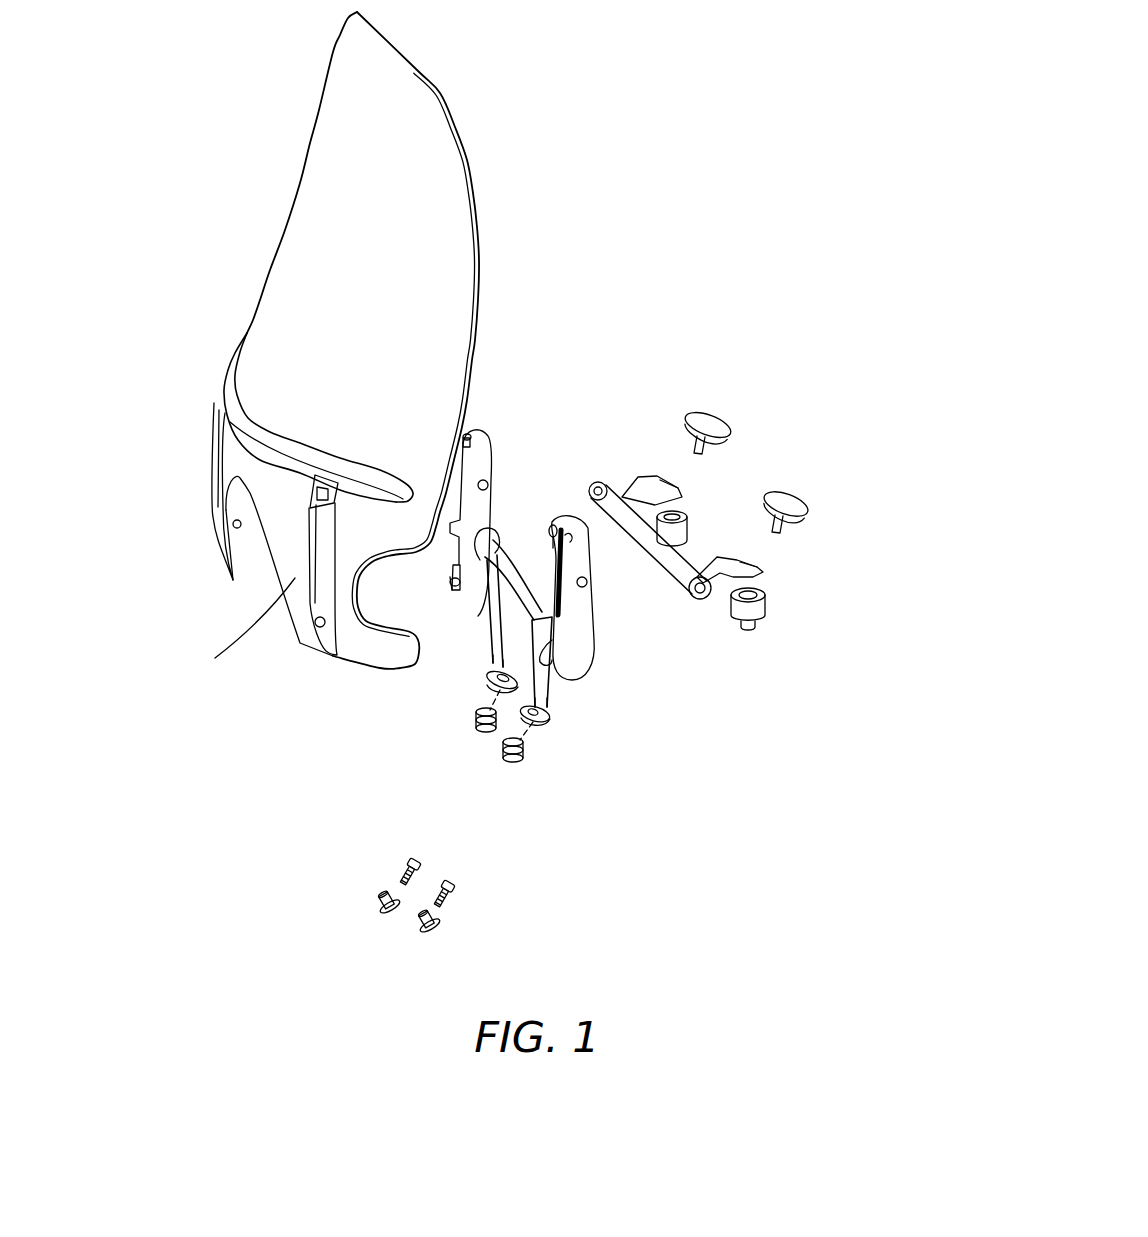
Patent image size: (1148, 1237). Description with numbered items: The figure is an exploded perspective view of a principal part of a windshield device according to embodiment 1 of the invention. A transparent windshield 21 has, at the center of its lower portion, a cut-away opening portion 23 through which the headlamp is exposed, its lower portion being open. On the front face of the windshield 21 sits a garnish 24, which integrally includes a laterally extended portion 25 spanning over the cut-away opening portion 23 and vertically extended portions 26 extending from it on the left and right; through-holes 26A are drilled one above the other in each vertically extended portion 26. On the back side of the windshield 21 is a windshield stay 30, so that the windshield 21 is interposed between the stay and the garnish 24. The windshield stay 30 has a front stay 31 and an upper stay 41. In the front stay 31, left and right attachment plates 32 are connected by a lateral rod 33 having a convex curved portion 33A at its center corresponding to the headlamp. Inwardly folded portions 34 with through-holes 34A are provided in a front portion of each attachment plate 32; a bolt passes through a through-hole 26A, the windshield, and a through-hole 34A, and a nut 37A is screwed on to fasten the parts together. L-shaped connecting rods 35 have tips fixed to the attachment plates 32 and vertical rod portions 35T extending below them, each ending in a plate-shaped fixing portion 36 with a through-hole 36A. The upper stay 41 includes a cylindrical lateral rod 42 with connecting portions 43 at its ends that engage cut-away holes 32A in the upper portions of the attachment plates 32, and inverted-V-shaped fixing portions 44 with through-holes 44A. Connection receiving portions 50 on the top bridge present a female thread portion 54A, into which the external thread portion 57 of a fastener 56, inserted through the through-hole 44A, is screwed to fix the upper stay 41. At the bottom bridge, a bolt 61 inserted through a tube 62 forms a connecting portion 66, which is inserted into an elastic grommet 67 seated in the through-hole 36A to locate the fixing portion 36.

The embodiment 1 is at (271, 116).
The windshield 21 is at (418, 81).
The cut-away opening portion 23 is at (258, 565).
The garnish 24 is at (229, 364).
The laterally extended portion 25 is at (248, 443).
The vertically extended portion 26 is at (310, 590).
The through-hole 26A is at (312, 486).
The windshield stay 30 is at (664, 298).
The front stay 31 is at (464, 720).
The attachment plate 32 is at (480, 437).
The cut-away hole 32A is at (489, 483).
The lateral rod 33 is at (513, 554).
The convex curved portion 33A is at (500, 553).
The inwardly folded portion 34 is at (463, 433).
The through-hole 34A is at (565, 535).
The connecting rod 35 is at (530, 630).
The vertical rod portion 35T is at (522, 698).
The fixing portion 36 is at (487, 683).
The through-hole 36A is at (547, 707).
The nut 37A is at (487, 437).
The upper stay 41 is at (737, 630).
The lateral rod 42 is at (677, 573).
The connecting portion 43 is at (600, 481).
The fixing portion 44 is at (655, 476).
The through-hole 44A is at (670, 482).
The connection receiving portion 50 is at (682, 527).
The female thread portion 54A is at (678, 520).
The fastener 56 is at (717, 412).
The external thread portion 57 is at (705, 452).
The bolt 61 is at (400, 875).
The tube 62 is at (422, 930).
The connecting portion 66 is at (447, 884).
The elastic grommet 67 is at (509, 762).